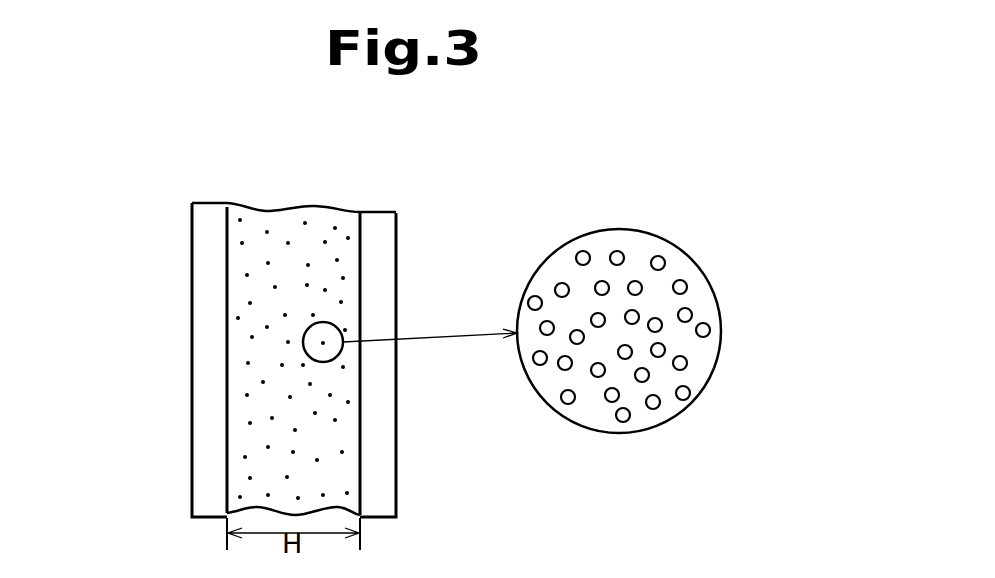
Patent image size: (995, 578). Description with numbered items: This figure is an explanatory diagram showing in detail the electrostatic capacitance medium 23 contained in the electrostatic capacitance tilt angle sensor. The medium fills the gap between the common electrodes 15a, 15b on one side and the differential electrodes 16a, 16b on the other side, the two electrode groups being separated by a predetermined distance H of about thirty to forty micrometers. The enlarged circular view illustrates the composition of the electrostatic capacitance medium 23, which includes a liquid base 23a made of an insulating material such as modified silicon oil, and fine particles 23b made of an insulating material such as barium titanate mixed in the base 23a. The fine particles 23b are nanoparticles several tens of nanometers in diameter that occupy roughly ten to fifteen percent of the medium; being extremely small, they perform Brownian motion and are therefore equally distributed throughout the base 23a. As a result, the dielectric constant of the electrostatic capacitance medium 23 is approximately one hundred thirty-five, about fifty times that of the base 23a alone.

The common electrode 15a is at (130, 360).
The common electrode 15b is at (205, 487).
The differential electrode 16a is at (455, 364).
The differential electrode 16b is at (385, 482).
The electrostatic capacitance medium 23 is at (321, 218).
The liquid base 23a is at (633, 240).
The fine particles 23b is at (684, 283).